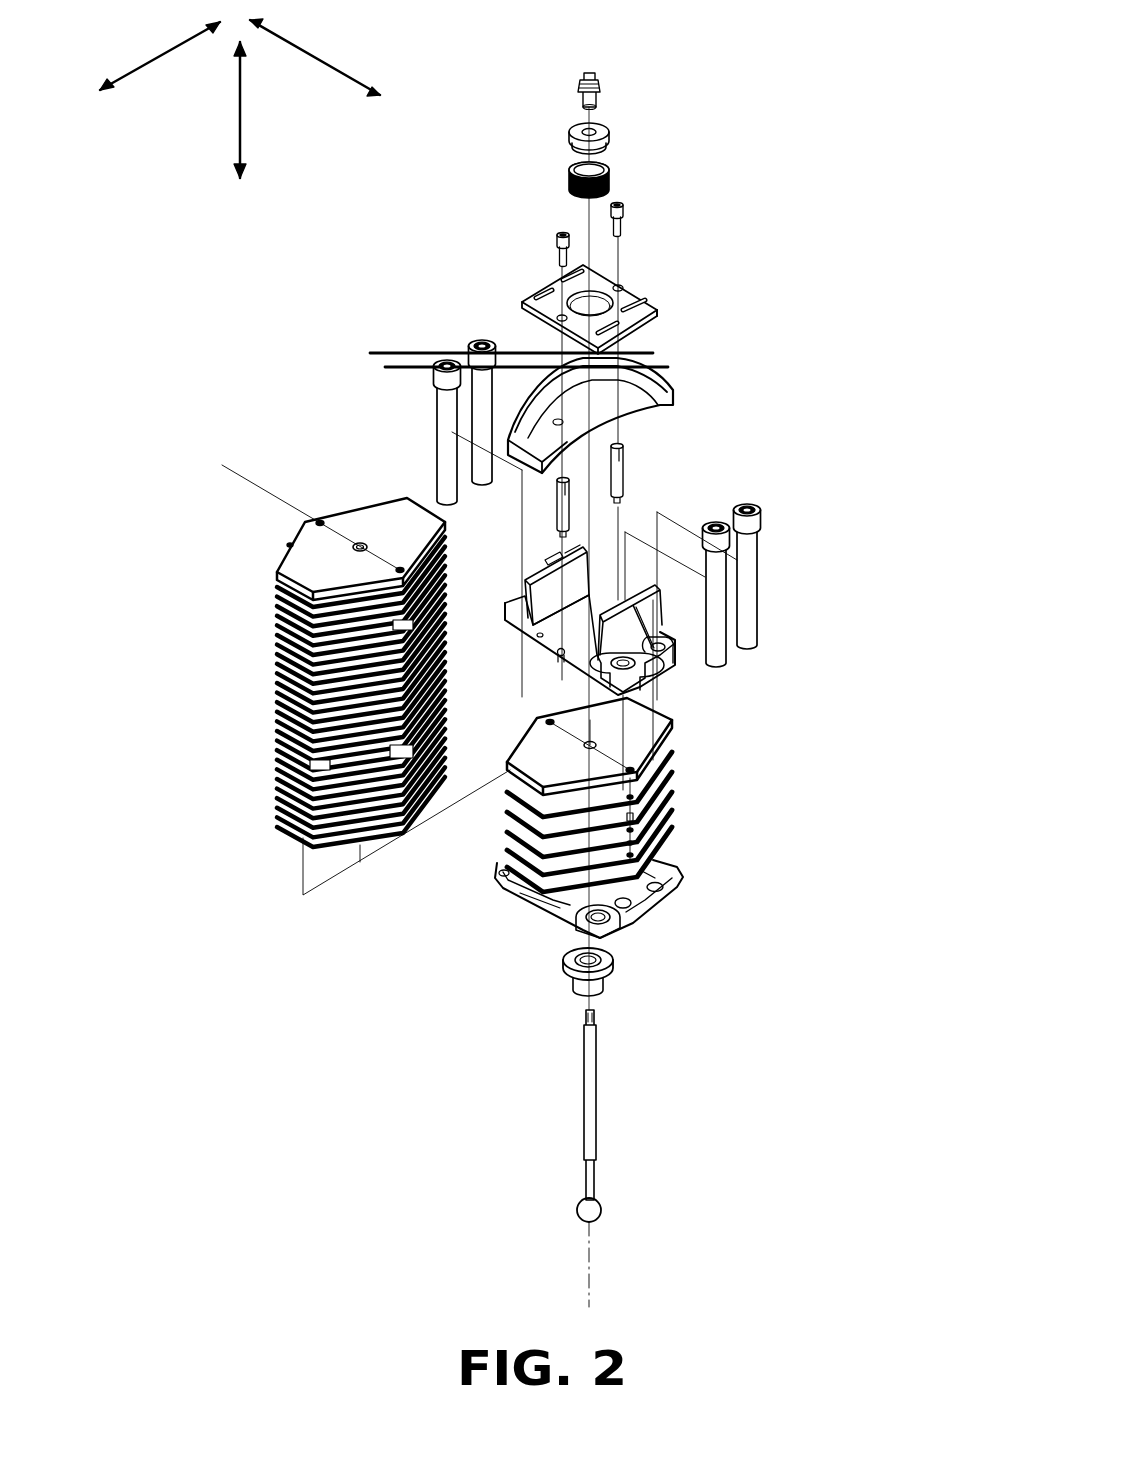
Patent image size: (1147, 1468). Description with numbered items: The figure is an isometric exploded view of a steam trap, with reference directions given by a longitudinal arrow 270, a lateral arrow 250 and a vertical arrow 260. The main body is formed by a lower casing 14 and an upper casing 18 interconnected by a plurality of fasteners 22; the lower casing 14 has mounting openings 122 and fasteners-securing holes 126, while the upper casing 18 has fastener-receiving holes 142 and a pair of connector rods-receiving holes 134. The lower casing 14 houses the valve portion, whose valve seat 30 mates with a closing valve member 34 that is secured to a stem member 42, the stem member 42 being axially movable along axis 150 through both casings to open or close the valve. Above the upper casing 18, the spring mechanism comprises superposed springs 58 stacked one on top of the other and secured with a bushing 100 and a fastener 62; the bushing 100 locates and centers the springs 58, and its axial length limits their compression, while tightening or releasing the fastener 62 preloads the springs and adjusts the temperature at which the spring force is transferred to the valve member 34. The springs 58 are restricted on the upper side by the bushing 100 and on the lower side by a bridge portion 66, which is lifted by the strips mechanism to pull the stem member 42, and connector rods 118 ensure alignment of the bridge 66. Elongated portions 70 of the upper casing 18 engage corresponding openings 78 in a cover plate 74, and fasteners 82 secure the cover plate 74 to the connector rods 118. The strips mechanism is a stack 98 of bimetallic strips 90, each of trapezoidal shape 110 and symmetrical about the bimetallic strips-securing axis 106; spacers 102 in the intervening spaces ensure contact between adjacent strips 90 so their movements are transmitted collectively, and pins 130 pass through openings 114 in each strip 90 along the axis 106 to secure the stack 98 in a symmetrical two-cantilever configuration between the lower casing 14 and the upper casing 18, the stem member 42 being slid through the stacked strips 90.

The lower casing 14 is at (687, 948).
The upper casing 18 is at (673, 665).
The fasteners 22 is at (440, 367).
The valve seat 30 is at (612, 965).
The valve member 34 is at (601, 1208).
The stem member 42 is at (595, 1093).
The springs 58 is at (612, 180).
The fastener 62 is at (600, 85).
The bridge portion 66 is at (657, 393).
The elongated portions 70 is at (632, 513).
The cover plate 74 is at (625, 300).
The openings 78 is at (658, 310).
The fasteners 82 is at (627, 210).
The bimetallic strips 90 is at (288, 478).
The stack 98 is at (481, 658).
The bushing 100 is at (612, 130).
The spacers 102 is at (300, 640).
The bimetallic strips-securing axis 106 is at (277, 525).
The trapezoidal shape 110 is at (340, 535).
The openings 114 is at (287, 520).
The connector rods 118 is at (625, 460).
The mounting openings 122 is at (685, 873).
The fasteners-securing holes 126 is at (685, 885).
The pins 130 is at (680, 807).
The connector rods-receiving holes 134 is at (556, 660).
The fastener-receiving holes 142 is at (683, 662).
The axis 150 is at (590, 1270).
The arrow 250 is at (297, 43).
The arrow 260 is at (240, 115).
The arrow 270 is at (180, 47).